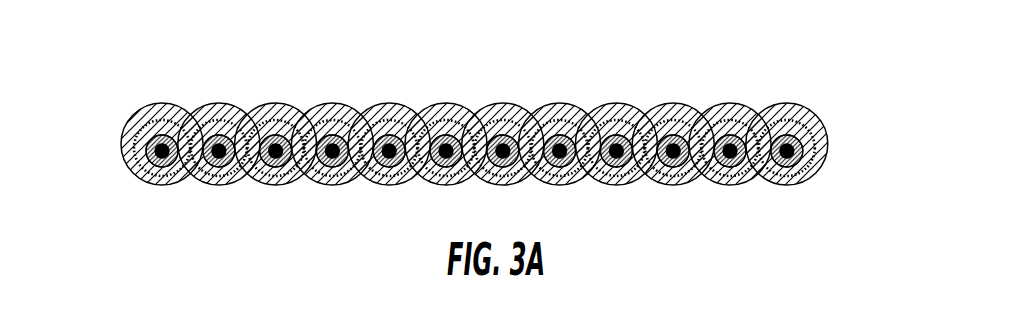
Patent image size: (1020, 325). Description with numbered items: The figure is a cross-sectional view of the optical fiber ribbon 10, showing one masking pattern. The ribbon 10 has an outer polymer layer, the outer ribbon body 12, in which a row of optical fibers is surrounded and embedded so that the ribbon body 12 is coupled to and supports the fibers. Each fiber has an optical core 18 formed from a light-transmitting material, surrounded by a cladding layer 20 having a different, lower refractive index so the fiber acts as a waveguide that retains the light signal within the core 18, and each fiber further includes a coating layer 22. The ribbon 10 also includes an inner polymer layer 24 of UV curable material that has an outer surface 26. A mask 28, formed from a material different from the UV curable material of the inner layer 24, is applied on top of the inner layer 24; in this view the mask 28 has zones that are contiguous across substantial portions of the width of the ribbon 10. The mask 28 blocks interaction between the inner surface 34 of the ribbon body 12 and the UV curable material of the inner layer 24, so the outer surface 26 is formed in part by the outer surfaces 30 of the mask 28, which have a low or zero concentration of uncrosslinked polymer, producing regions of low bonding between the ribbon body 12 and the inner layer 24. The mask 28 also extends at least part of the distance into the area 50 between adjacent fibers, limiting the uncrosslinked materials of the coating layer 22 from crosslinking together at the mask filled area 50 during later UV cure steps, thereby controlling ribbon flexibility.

The optical fiber ribbon 10 is at (501, 125).
The outer ribbon body 12 is at (789, 105).
The optical core 18 is at (153, 170).
The cladding layer 20 is at (176, 172).
The coating layer 22 is at (148, 160).
The inner polymer layer 24 is at (817, 133).
The outer surface 26 is at (203, 110).
The mask 28 is at (425, 120).
The outer surfaces of mask 30 is at (343, 141).
The inner surface 34 is at (672, 133).
The area between adjacent fibers 50 is at (334, 172).